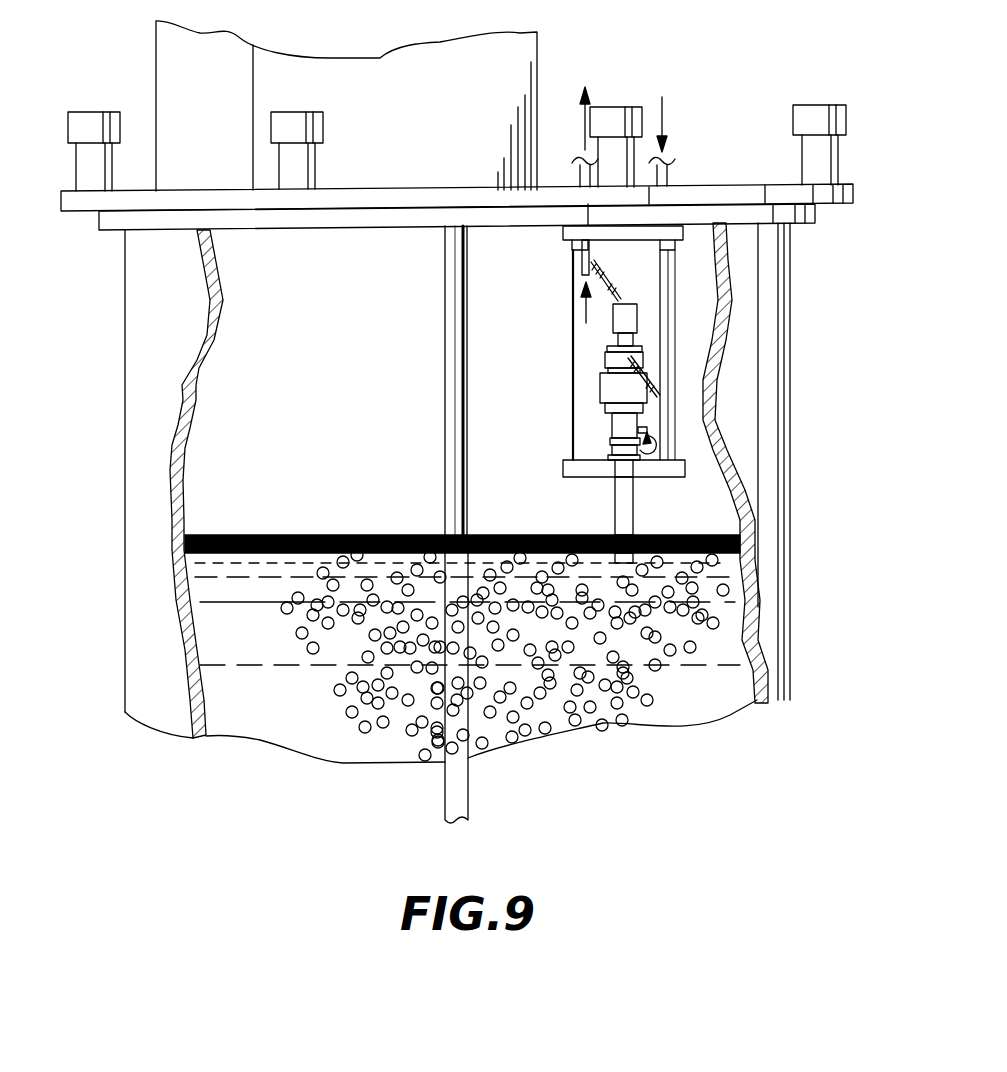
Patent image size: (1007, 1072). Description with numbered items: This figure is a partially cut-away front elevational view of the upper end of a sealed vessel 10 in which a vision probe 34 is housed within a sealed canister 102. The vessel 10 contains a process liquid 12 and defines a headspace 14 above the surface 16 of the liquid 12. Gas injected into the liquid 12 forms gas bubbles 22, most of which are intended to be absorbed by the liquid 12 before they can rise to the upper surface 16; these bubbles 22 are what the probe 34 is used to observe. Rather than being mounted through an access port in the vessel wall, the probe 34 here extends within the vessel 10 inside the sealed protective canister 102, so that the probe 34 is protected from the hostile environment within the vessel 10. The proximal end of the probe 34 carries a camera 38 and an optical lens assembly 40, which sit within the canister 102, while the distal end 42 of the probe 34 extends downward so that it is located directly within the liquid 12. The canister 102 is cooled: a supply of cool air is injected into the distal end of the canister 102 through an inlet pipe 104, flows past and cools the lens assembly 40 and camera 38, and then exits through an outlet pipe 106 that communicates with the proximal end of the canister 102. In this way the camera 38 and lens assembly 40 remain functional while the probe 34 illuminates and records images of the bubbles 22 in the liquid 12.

The vessel 10 is at (772, 487).
The process liquid 12 is at (244, 718).
The headspace 14 is at (200, 513).
The surface of the liquid 16 is at (232, 540).
The gas bubbles 22 is at (647, 703).
The vision probe 34 is at (657, 397).
The camera 38 is at (605, 327).
The optical lens assembly 40 is at (601, 400).
The distal end 42 is at (620, 512).
The sealed protective canister 102 is at (670, 267).
The inlet pipe 104 is at (664, 312).
The outlet pipe 106 is at (573, 257).